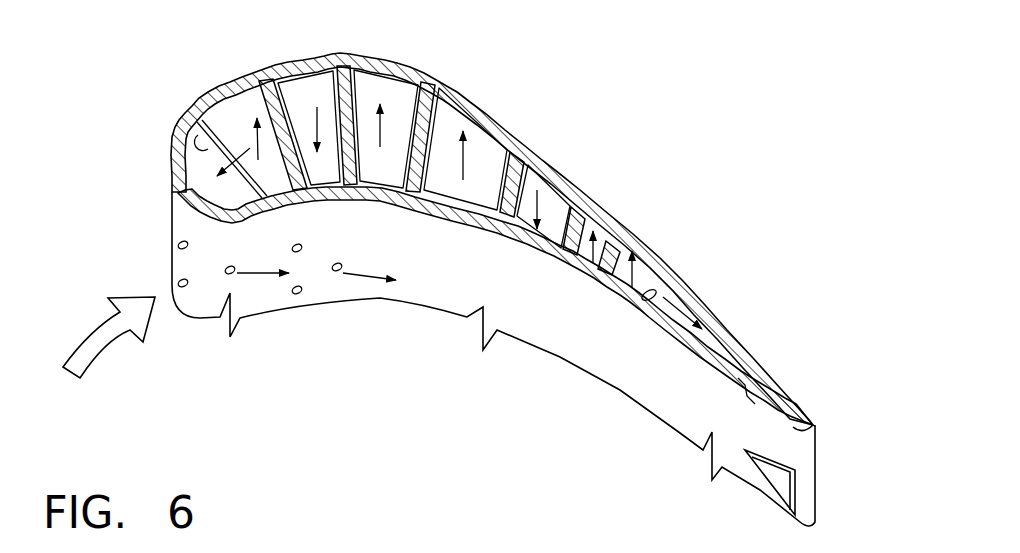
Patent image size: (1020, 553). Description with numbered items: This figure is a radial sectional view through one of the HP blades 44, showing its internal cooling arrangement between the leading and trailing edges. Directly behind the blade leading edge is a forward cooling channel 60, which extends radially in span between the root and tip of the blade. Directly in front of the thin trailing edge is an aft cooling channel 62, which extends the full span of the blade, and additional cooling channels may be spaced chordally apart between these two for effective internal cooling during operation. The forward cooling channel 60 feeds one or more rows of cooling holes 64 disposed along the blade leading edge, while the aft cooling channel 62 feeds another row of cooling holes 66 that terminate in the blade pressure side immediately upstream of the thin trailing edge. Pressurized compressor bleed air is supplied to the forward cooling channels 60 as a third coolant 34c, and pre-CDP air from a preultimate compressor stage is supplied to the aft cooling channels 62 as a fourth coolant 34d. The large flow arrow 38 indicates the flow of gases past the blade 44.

The third coolant 34c is at (398, 74).
The fourth coolant 34d is at (635, 282).
The hot gas flow 38 is at (92, 332).
The HP blade 44 is at (480, 95).
The forward cooling channel 60 is at (212, 152).
The aft cooling channel 62 is at (657, 297).
The cooling holes 64 is at (173, 244).
The cooling holes 66 is at (750, 406).